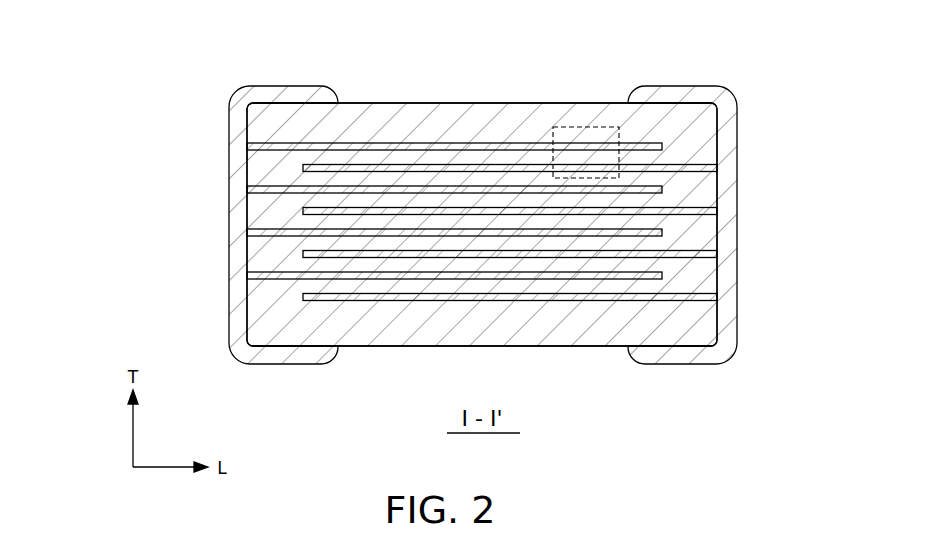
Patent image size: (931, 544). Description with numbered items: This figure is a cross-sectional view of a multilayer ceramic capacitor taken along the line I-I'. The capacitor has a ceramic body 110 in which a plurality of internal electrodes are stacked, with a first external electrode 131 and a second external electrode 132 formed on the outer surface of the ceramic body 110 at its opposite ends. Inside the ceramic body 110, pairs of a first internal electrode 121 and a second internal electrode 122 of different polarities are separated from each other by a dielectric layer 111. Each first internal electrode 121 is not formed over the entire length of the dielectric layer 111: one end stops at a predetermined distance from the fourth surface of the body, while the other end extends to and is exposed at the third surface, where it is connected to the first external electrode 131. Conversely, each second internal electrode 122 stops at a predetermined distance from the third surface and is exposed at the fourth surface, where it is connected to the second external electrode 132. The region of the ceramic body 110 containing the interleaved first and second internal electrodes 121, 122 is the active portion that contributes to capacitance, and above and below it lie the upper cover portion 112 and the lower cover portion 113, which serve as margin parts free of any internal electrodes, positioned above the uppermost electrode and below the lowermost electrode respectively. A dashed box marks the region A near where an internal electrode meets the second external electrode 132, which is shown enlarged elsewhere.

The ceramic body 110 is at (485, 103).
The dielectric layer 111 is at (255, 155).
The upper cover portion 112 is at (383, 125).
The lower cover portion 113 is at (390, 346).
The first internal electrode 121 is at (258, 142).
The second internal electrode 122 is at (260, 190).
The first external electrode 131 is at (285, 84).
The second external electrode 132 is at (683, 88).
The enlarged region A is at (590, 126).